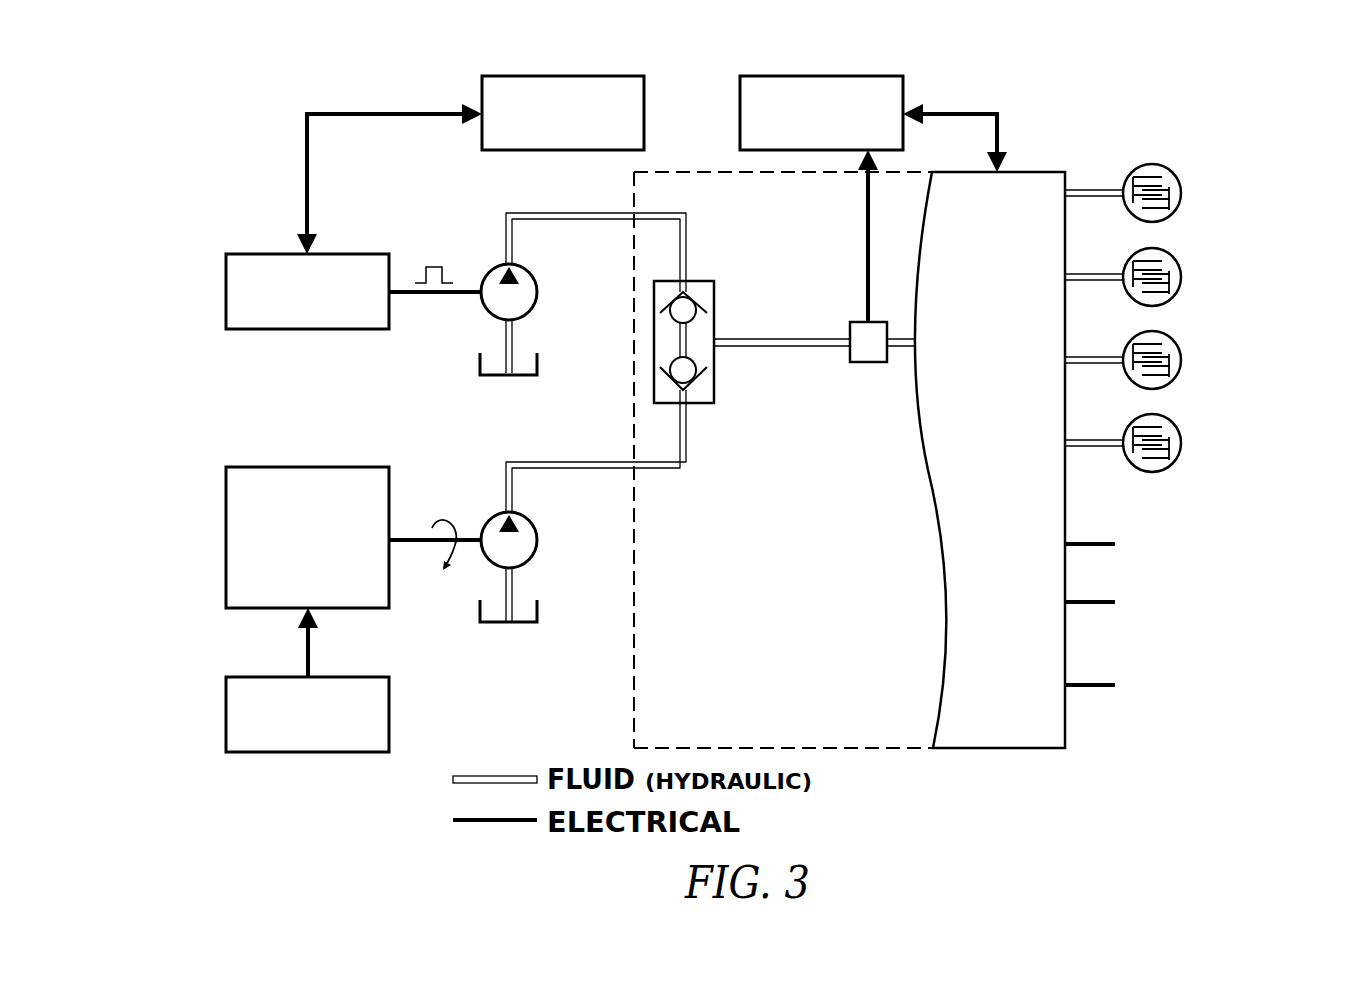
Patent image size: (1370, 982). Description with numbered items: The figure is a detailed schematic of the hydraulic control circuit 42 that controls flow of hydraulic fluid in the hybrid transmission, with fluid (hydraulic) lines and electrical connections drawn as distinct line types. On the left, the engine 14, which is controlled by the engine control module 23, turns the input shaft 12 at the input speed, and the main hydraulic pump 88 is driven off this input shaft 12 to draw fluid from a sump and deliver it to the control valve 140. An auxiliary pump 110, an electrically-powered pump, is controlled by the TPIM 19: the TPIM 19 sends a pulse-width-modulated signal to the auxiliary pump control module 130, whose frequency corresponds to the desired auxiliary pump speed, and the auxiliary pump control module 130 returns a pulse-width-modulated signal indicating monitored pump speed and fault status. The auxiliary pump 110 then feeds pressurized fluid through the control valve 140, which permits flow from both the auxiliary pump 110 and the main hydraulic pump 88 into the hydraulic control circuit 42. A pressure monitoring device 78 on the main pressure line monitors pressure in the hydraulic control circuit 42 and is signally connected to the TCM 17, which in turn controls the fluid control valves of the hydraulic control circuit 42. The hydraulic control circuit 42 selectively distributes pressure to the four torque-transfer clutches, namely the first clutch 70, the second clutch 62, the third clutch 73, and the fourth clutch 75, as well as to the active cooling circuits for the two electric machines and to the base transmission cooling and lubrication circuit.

The TPIM 19 is at (603, 85).
The TCM 17 is at (877, 85).
The auxiliary pump control module 130 is at (258, 260).
The auxiliary pump 110 is at (537, 293).
The main hydraulic pump 88 is at (537, 540).
The control valve 140 is at (700, 290).
The pressure monitoring device 78 is at (849, 330).
The hydraulic control circuit 42 is at (1014, 516).
The engine 14 is at (324, 580).
The input shaft 12 is at (398, 543).
The engine control module 23 is at (243, 681).
The clutch C1 70 is at (1182, 193).
The clutch C2 62 is at (1182, 277).
The clutch C3 73 is at (1182, 360).
The clutch C4 75 is at (1182, 443).